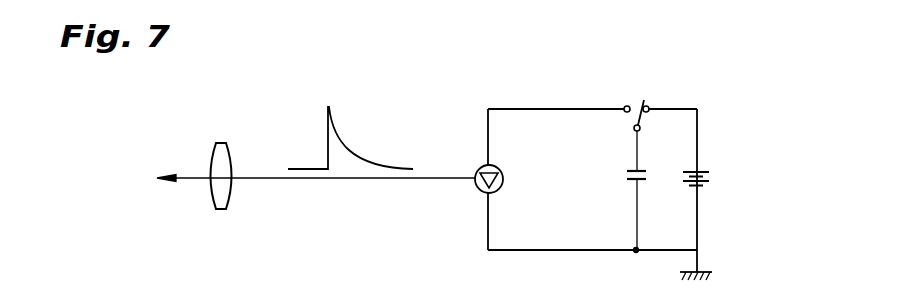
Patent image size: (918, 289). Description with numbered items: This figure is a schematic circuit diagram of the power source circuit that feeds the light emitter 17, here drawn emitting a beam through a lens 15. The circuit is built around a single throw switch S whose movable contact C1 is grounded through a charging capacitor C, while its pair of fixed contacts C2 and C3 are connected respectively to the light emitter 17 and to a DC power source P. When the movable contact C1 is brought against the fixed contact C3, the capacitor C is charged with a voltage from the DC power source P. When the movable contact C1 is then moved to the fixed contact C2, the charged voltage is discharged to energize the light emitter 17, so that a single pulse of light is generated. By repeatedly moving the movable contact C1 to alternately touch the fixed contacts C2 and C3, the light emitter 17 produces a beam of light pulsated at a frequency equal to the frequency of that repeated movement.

The lens 15 is at (232, 198).
The light emitter 17 is at (474, 187).
The fixed contact C2 is at (625, 105).
The fixed contact C3 is at (650, 100).
The movable contact C1 is at (633, 122).
The single throw switch S is at (634, 104).
The charging capacitor C is at (627, 175).
The DC power source P is at (706, 175).